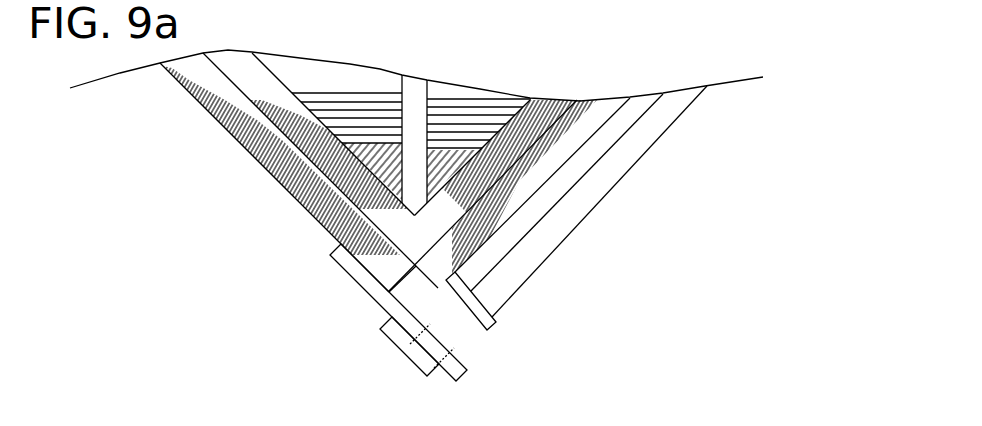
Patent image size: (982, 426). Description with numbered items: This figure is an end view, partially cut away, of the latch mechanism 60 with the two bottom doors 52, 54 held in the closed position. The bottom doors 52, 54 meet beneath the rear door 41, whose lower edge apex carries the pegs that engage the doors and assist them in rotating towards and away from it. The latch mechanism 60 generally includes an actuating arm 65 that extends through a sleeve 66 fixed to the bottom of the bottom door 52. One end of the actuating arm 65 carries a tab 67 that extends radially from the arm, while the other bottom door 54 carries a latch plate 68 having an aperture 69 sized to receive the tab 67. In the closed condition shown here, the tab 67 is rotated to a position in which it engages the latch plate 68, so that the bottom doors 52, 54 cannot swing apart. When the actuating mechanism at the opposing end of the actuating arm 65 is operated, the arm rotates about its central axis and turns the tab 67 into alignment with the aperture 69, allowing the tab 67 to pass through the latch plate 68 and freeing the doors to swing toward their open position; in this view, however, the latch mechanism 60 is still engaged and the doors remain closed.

The rear door 41 is at (361, 76).
The bottom door 52 is at (547, 165).
The bottom door 54 is at (217, 119).
The latch mechanism 60 is at (505, 394).
The actuating arm 65 is at (532, 252).
The sleeve 66 is at (490, 326).
The tab 67 is at (392, 335).
The latch plate 68 is at (343, 262).
The aperture 69 is at (450, 373).